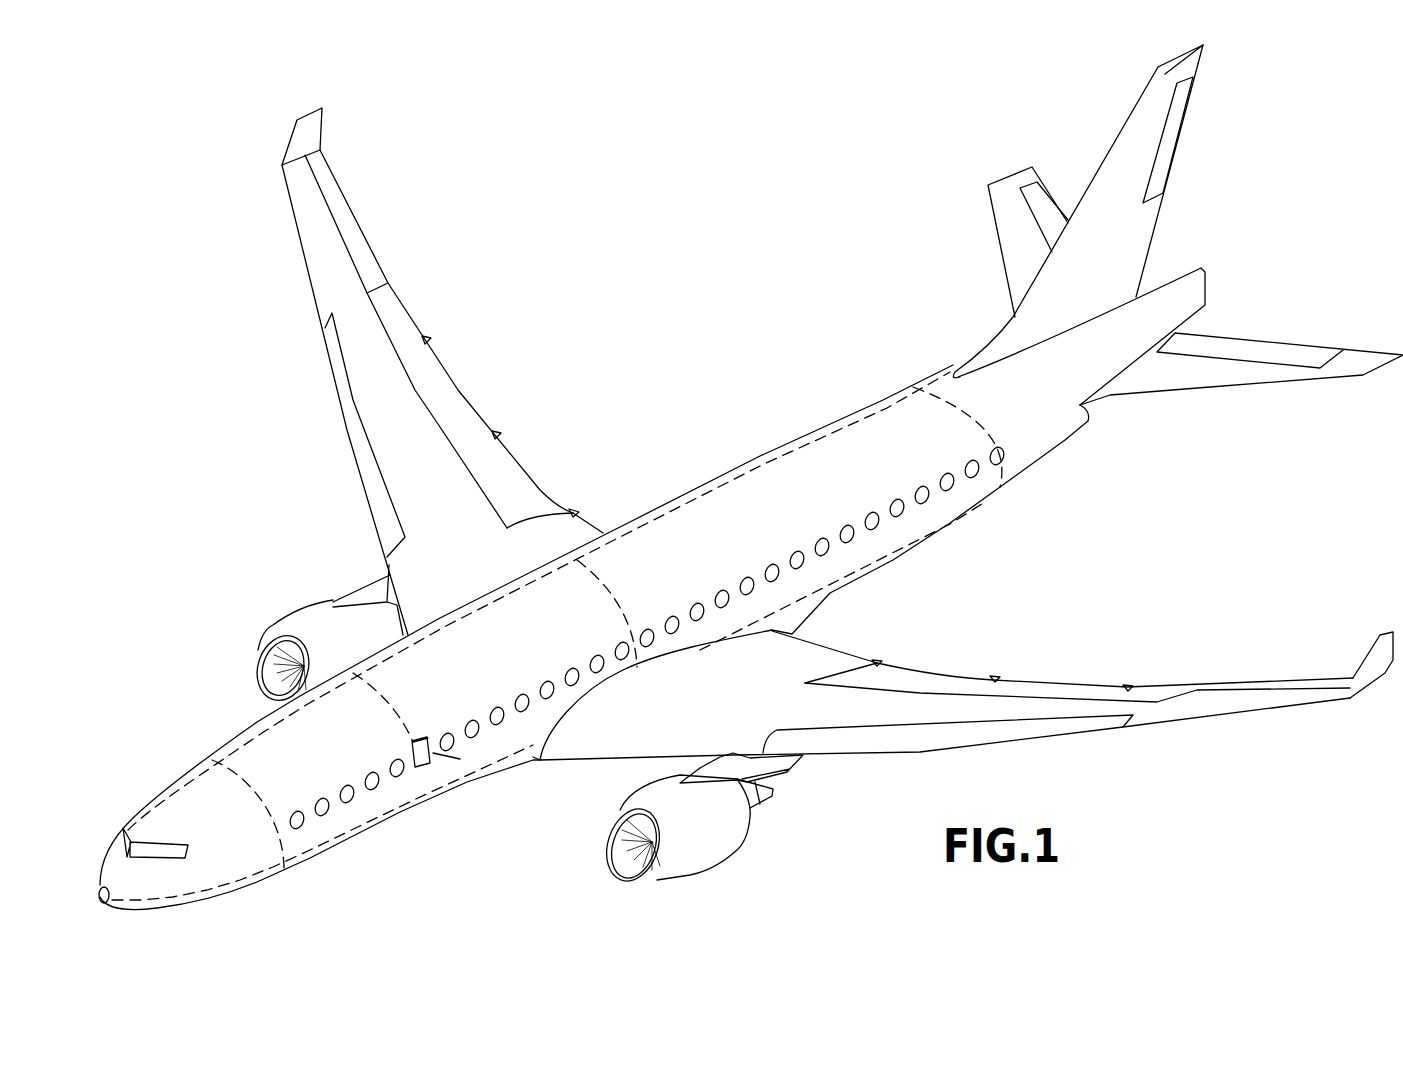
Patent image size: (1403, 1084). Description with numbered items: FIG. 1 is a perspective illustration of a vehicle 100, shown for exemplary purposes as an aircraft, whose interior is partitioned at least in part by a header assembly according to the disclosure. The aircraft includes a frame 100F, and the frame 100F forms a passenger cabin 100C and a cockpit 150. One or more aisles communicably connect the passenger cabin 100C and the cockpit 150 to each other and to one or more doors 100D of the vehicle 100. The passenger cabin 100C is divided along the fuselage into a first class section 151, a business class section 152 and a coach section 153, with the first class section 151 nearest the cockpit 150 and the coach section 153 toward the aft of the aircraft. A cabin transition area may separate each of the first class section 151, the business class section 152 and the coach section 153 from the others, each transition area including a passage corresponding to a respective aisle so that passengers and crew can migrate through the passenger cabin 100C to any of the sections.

The vehicle 100 is at (228, 398).
The cockpit 150 is at (203, 853).
The first class section 151 is at (281, 738).
The business class section 152 is at (510, 613).
The coach section 153 is at (725, 513).
The passenger cabin 100C is at (418, 778).
The doors 100D is at (433, 753).
The frame 100F is at (419, 778).